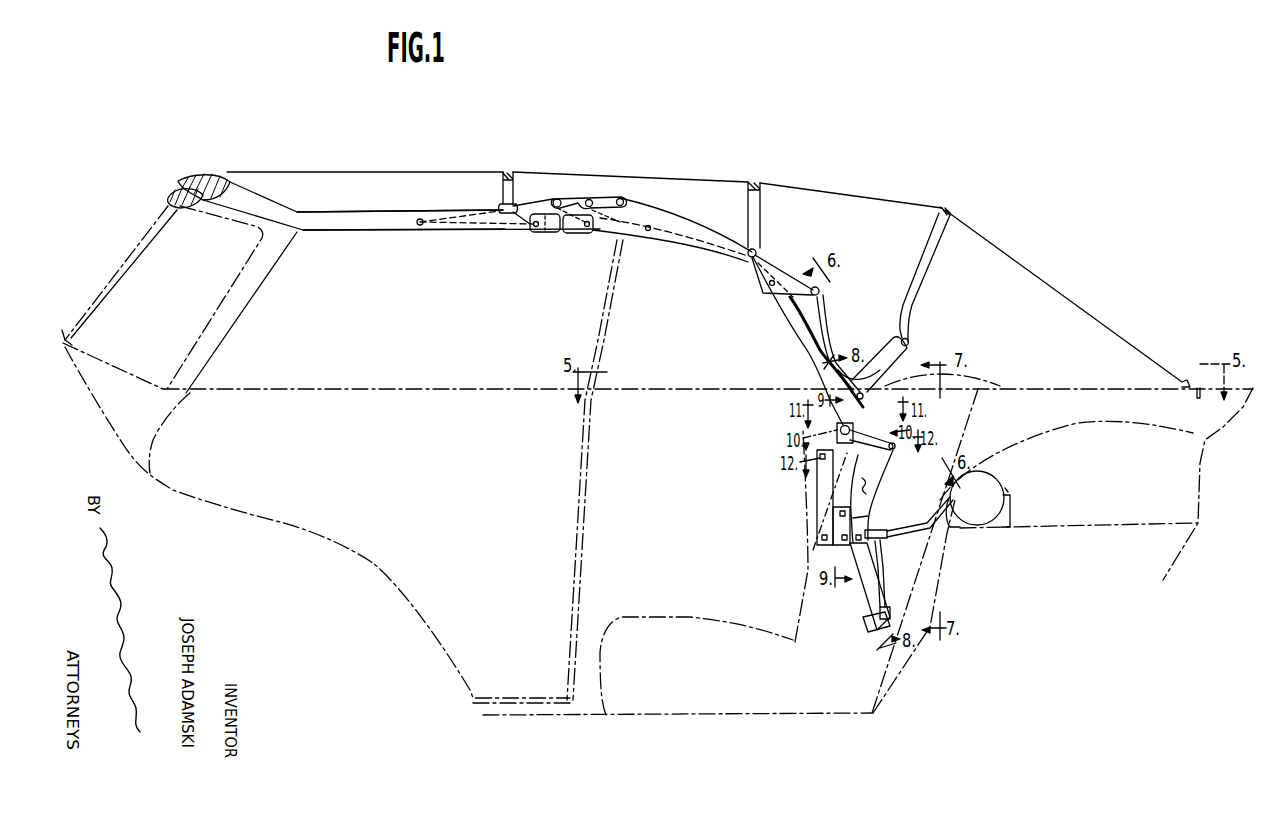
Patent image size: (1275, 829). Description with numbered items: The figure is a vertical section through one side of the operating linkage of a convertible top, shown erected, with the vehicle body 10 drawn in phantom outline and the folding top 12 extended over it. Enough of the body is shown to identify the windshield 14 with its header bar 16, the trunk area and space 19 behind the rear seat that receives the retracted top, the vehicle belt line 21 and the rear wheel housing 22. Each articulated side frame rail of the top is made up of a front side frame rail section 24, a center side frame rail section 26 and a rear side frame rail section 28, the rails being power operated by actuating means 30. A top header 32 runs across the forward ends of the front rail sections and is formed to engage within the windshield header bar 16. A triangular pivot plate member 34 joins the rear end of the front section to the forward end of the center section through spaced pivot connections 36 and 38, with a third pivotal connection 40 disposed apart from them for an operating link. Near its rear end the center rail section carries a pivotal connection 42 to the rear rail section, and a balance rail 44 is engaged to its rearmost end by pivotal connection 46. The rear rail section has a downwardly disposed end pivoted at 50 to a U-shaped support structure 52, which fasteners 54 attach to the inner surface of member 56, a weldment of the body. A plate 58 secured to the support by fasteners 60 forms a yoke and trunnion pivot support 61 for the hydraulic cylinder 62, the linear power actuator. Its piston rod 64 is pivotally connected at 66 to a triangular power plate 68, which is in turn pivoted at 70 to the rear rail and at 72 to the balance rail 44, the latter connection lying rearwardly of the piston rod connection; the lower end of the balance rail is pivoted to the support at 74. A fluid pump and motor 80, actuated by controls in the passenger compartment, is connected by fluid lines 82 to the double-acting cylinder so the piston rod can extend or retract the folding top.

The vehicle body 10 is at (430, 414).
The folding top 12 is at (813, 192).
The windshield 14 is at (132, 260).
The header bar 16 is at (167, 204).
The trunk area and space 19 is at (1064, 384).
The vehicle belt line 21 is at (682, 388).
The rear wheel housing 22 is at (1196, 432).
The front side frame rail section 24 is at (355, 227).
The center side frame rail section 26 is at (664, 236).
The rear side frame rail section 28 is at (788, 326).
The actuating means 30 is at (856, 592).
The top header 32 is at (196, 180).
The pivot plate member 34 is at (553, 232).
The pivot connection 36 is at (532, 230).
The pivot connection 38 is at (588, 232).
The third pivotal connection 40 is at (557, 198).
The pivotal connection 42 is at (770, 285).
The balance rail 44 is at (828, 322).
The pivotal connection 46 is at (825, 294).
The pivotal connection 50 is at (841, 434).
The support structure 52 is at (820, 512).
The fasteners 54 is at (818, 538).
The member 56 is at (883, 500).
The plate 58 is at (872, 579).
The fasteners 60 is at (816, 550).
The yoke and trunnion pivot support 61 is at (876, 540).
The hydraulic cylinder 62 is at (866, 621).
The piston rod 64 is at (880, 518).
The pivotal connection 66 is at (822, 480).
The power plate 68 is at (890, 436).
The pivotal connection 70 is at (862, 394).
The pivotal connection 72 is at (886, 452).
The pivotal connection 74 is at (880, 490).
The fluid pump and motor 80 is at (996, 485).
The fluid lines 82 is at (756, 254).